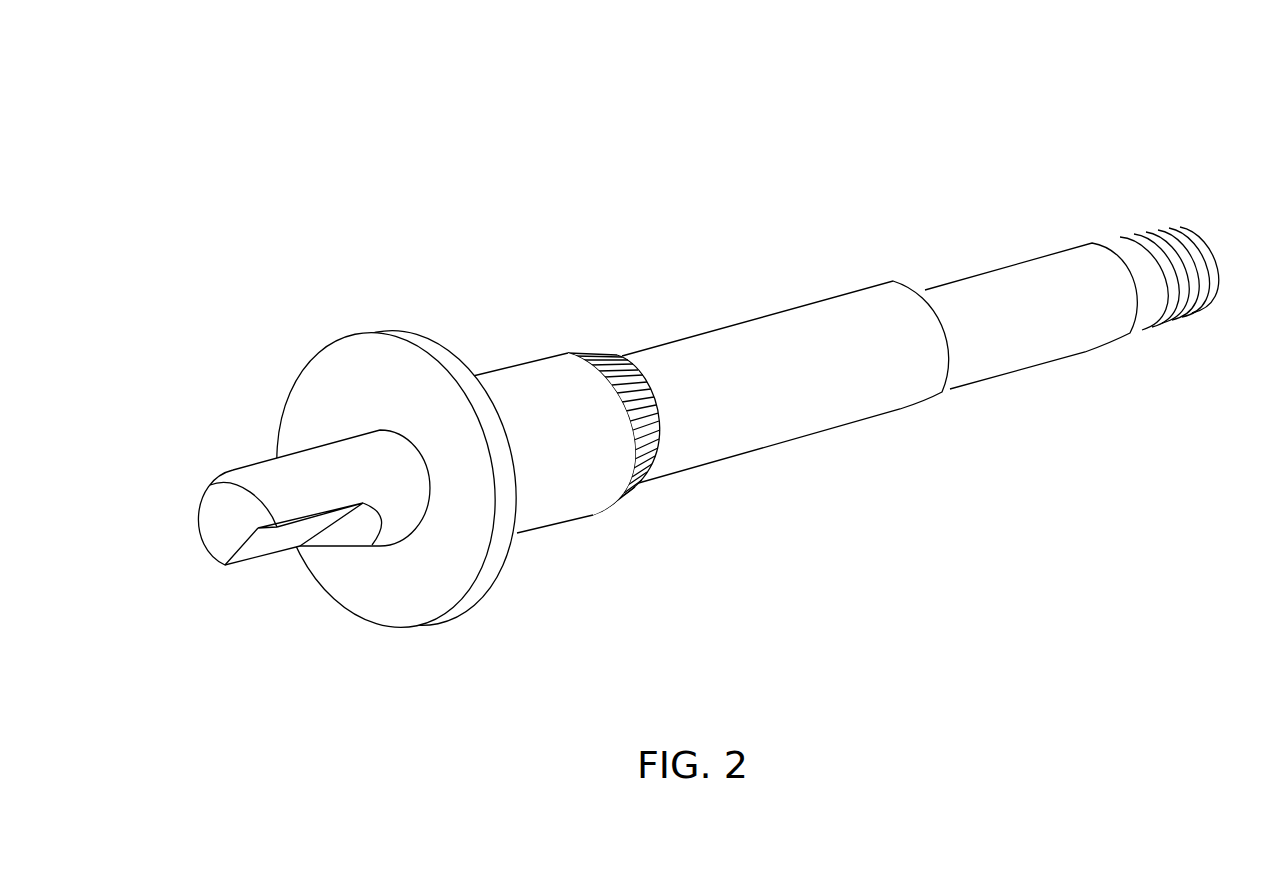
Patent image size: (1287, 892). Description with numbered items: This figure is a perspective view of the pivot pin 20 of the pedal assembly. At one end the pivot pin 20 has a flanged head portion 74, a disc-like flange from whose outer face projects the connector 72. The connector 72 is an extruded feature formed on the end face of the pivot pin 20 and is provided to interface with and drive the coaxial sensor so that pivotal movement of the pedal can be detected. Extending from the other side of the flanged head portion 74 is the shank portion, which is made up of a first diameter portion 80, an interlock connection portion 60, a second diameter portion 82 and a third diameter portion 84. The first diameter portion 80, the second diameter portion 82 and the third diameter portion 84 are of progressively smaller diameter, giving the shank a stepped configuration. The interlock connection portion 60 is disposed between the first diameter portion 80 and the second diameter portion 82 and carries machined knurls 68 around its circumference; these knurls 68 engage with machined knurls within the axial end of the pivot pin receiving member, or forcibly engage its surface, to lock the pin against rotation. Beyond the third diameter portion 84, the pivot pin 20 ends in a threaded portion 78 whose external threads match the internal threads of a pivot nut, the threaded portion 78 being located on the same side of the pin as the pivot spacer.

The pivot pin 20 is at (1057, 143).
The interlock connection portion 60 is at (615, 404).
The machined knurls 68 is at (622, 357).
The connector 72 is at (223, 523).
The flanged head portion 74 is at (417, 607).
The threaded portion 78 is at (1198, 308).
The first diameter portion 80 is at (545, 503).
The second diameter portion 82 is at (780, 422).
The third diameter portion 84 is at (1023, 345).